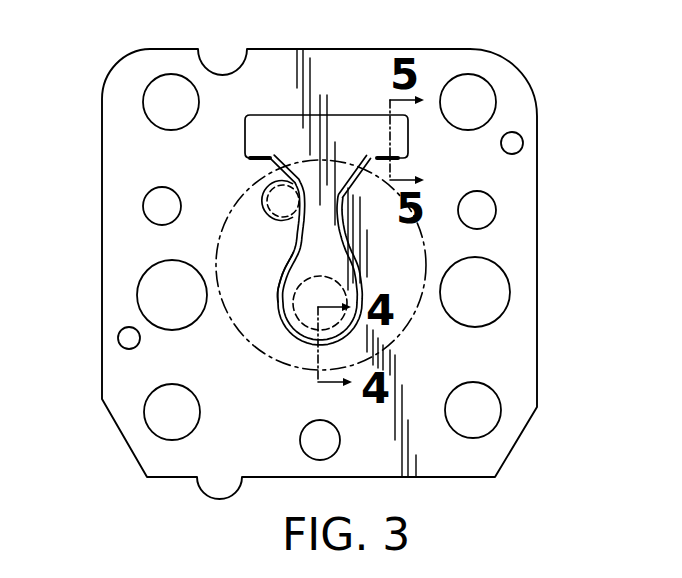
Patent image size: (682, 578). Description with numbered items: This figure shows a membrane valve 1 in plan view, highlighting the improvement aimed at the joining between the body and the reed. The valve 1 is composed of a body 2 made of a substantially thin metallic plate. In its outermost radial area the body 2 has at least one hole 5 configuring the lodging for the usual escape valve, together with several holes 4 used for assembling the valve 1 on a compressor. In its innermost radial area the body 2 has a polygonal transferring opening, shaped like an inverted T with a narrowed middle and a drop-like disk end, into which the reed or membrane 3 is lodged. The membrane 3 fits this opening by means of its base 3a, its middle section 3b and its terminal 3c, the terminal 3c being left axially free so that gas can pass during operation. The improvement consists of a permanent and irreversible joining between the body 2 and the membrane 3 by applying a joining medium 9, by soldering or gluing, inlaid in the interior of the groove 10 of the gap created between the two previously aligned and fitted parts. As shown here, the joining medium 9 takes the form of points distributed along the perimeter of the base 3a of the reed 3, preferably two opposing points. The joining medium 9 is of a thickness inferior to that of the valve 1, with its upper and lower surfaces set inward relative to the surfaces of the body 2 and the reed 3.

The membrane valve 1 is at (511, 36).
The body 2 is at (518, 165).
The membrane 3 is at (352, 262).
The base 3a is at (345, 125).
The middle section 3b is at (312, 203).
The terminal 3c is at (290, 318).
The holes 4 is at (148, 302).
The hole 5 is at (488, 210).
The joining medium 9 is at (270, 157).
The groove 10 is at (287, 273).